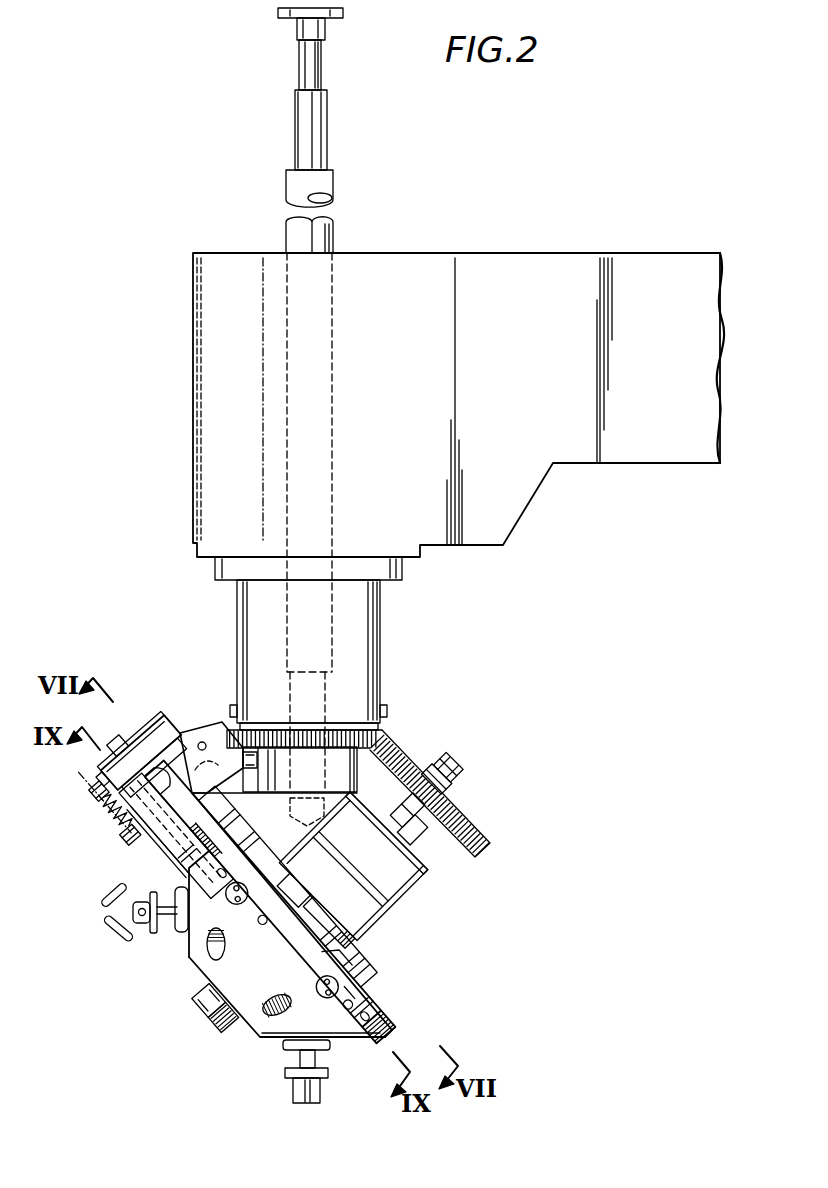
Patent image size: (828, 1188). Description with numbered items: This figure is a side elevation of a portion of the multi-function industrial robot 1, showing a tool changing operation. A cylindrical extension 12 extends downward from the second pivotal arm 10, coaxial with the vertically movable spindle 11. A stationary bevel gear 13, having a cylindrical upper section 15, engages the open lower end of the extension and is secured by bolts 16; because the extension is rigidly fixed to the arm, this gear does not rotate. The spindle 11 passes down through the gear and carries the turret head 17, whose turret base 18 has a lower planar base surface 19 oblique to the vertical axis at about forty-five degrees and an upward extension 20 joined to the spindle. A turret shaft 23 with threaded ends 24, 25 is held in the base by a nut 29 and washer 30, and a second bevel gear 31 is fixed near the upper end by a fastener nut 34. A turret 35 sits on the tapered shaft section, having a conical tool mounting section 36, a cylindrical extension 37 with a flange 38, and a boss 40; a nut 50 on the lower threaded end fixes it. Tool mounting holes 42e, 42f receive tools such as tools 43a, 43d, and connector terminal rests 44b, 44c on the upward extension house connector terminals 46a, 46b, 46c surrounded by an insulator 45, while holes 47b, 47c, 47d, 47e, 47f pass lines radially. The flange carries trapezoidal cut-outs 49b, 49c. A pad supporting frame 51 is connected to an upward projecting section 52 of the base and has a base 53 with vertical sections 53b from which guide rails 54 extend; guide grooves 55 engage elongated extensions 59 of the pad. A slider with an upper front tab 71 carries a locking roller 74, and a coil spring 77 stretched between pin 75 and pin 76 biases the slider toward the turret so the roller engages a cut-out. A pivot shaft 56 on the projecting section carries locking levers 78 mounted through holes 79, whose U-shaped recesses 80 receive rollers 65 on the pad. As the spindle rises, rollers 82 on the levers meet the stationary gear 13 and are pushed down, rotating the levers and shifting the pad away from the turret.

The machine tool spindle head assembly 1 is at (567, 174).
The second pivotal arm 10 is at (650, 270).
The vertically movable spindle 11 is at (323, 184).
The cylindrical extension 12 is at (362, 618).
The bevel gear 13 is at (331, 740).
The cylindrical upper section 15 is at (275, 726).
The bolts 16 is at (236, 705).
The turret head 17 is at (425, 975).
The turret base 18 is at (442, 890).
The lower planar base surface 19 is at (306, 882).
The upward extension 20 is at (356, 781).
The turret shaft 23 is at (421, 827).
The threaded end 24 is at (460, 766).
The threaded end 25 is at (203, 1004).
The nut 29 is at (418, 848).
The washer 30 is at (426, 872).
The bevel gear 31 is at (488, 853).
The fastener nut 34 is at (460, 786).
The turret 35 is at (254, 1040).
The conical tool mounting section 36 is at (252, 1017).
The cylindrical extension 37 is at (318, 912).
The flange 38 is at (312, 895).
The boss 40 is at (330, 952).
The tool mounting hole 42e is at (275, 1016).
The tool mounting hole 42f is at (207, 944).
The tool 43a is at (136, 940).
The tool 43d is at (296, 1086).
The connector terminal rest 44b is at (321, 987).
The connector terminal rest 44c is at (289, 880).
The insulator 45 is at (237, 905).
The connector terminals 46a is at (378, 1034).
The connector terminals 46b is at (350, 986).
The connector terminals 46c is at (233, 897).
The hole 47b is at (380, 1022).
The hole 47c is at (350, 1004).
The hole 47d is at (335, 926).
The hole 47e is at (263, 926).
The hole 47f is at (243, 850).
The cut-out 49b is at (346, 976).
The cut-out 49c is at (262, 868).
The nut 50 is at (226, 1024).
The pad supporting frame 51 is at (148, 723).
The upward projecting section 52 is at (175, 748).
The base 53 is at (140, 730).
The vertical sections 53b is at (133, 740).
The guide rails 54 is at (170, 820).
The guide grooves 55 is at (127, 838).
The pivot shaft 56 is at (207, 731).
The elongated extensions 59 is at (120, 823).
The rollers 65 is at (112, 763).
The upper front tab 71 is at (217, 814).
The locking roller 74 is at (192, 842).
The pin 75 is at (133, 899).
The pin 76 is at (90, 794).
The coil spring 77 is at (112, 808).
The locking levers 78 is at (252, 768).
The holes 79 is at (202, 742).
The U-shaped recesses 80 is at (155, 758).
The roller 82 is at (274, 770).